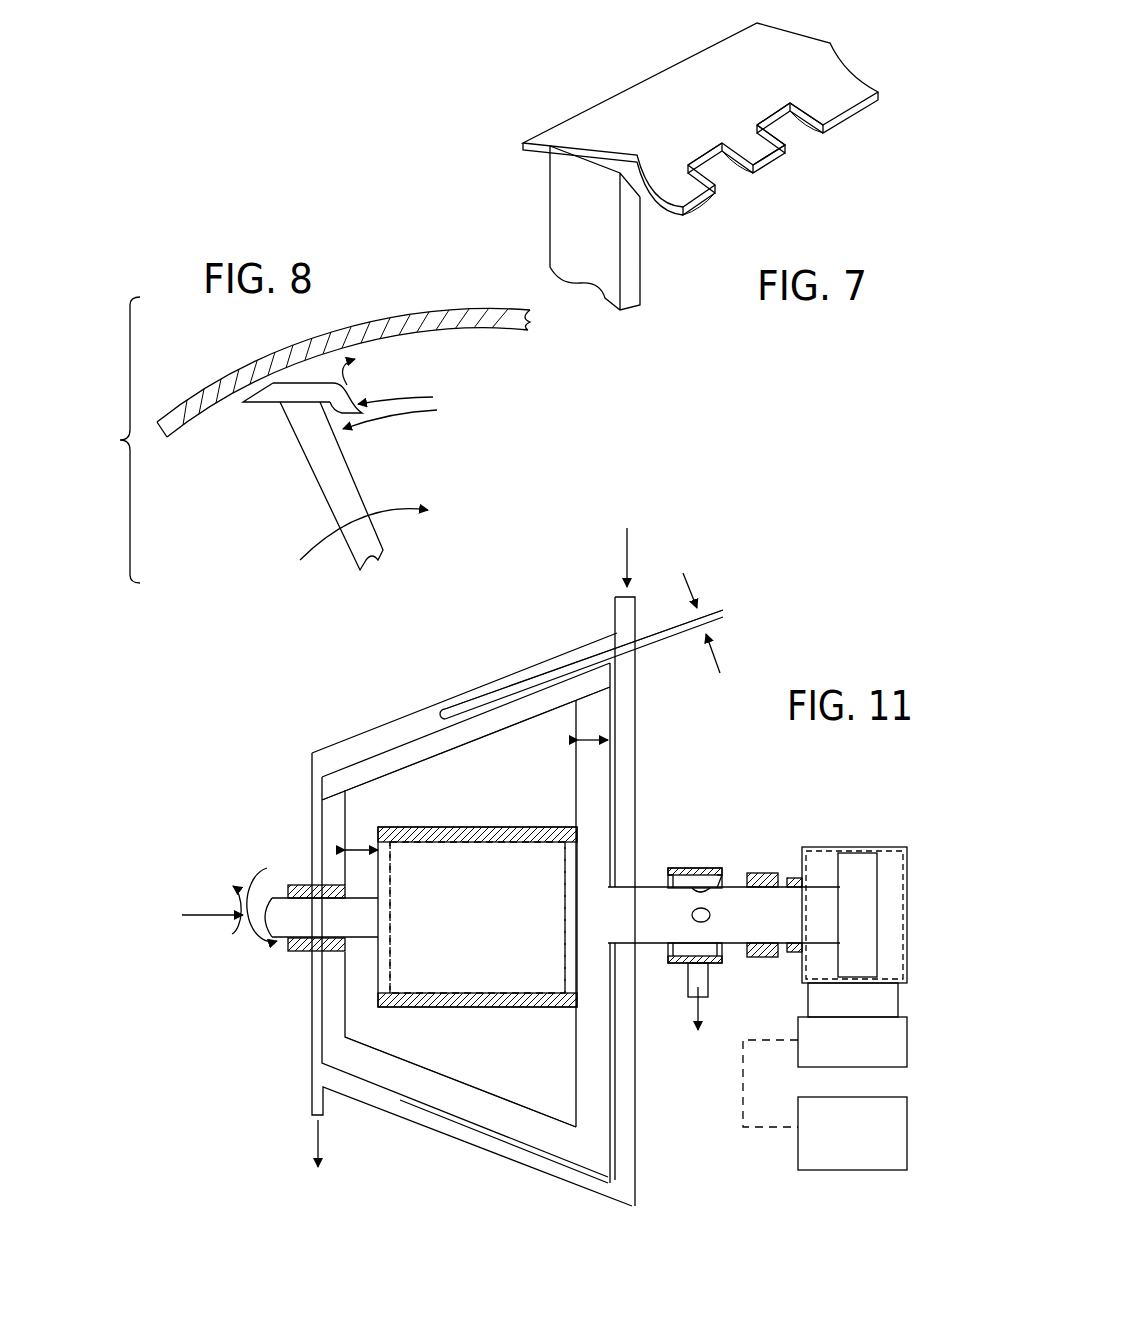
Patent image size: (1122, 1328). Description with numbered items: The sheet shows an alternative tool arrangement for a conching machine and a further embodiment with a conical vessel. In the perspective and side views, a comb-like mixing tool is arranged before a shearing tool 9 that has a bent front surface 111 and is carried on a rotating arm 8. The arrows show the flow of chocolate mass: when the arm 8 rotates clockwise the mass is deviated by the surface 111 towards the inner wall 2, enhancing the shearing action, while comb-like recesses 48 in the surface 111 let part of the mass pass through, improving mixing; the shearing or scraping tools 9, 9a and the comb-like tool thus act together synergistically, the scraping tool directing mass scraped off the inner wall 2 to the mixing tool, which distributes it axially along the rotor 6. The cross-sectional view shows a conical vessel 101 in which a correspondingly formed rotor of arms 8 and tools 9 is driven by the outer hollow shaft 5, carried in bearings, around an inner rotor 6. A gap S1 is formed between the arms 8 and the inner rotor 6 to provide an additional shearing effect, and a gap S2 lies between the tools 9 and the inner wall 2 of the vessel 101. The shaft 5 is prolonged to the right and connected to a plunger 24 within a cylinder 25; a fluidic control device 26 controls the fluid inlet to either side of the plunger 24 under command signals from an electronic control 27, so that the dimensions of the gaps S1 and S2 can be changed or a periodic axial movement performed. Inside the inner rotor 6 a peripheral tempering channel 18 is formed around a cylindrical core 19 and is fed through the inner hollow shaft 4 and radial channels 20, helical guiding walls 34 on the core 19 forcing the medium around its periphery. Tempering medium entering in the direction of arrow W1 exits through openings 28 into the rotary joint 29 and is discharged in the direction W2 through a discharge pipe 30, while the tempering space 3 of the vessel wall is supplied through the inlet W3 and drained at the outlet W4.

In FIG. 8, the inner wall 2 is at (193, 420).
In FIG. 11, the inner wall 2 is at (447, 712).
In FIG. 11, the tempering space 3 is at (550, 670).
In FIG. 11, the hollow shaft 4 is at (277, 890).
In FIG. 11, the hollow shaft 5 is at (297, 887).
In FIG. 11, the inner rotor 6 is at (497, 833).
In FIG. 7, the arm 8 is at (570, 220).
In FIG. 8, the arm 8 is at (333, 490).
In FIG. 11, the arm 8 is at (628, 710).
In FIG. 11, the shearing tool 9 is at (417, 755).
In FIG. 7, the shearing tool 9a is at (640, 110).
In FIG. 8, the shearing tool 9a is at (270, 402).
In FIG. 11, the shearing tool 9a is at (483, 1110).
In FIG. 11, the tempering channel 18 is at (453, 833).
In FIG. 11, the core 19 is at (490, 957).
In FIG. 11, the radial channels 20 is at (567, 843).
In FIG. 11, the plunger 24 is at (860, 883).
In FIG. 11, the cylinder 25 is at (823, 870).
In FIG. 11, the control device 26 is at (866, 1055).
In FIG. 11, the electronic control 27 is at (866, 1145).
In FIG. 11, the openings 28 is at (693, 938).
In FIG. 11, the rotary joint 29 is at (704, 876).
In FIG. 11, the discharge pipe 30 is at (708, 980).
In FIG. 11, the helical guiding walls 34 is at (420, 1007).
In FIG. 7, the comb-like recesses 48 is at (803, 140).
In FIG. 11, the vessel 101 is at (483, 683).
In FIG. 7, the bent front surface 111 is at (830, 72).
In FIG. 8, the bent front surface 111 is at (353, 407).
In FIG. 11, the gap S1 is at (593, 722).
In FIG. 11, the gap S2 is at (704, 620).
In FIG. 11, the arrow W1 is at (200, 913).
In FIG. 11, the arrow W2 is at (690, 1010).
In FIG. 11, the inlet W3 is at (623, 548).
In FIG. 11, the outlet W4 is at (313, 1140).